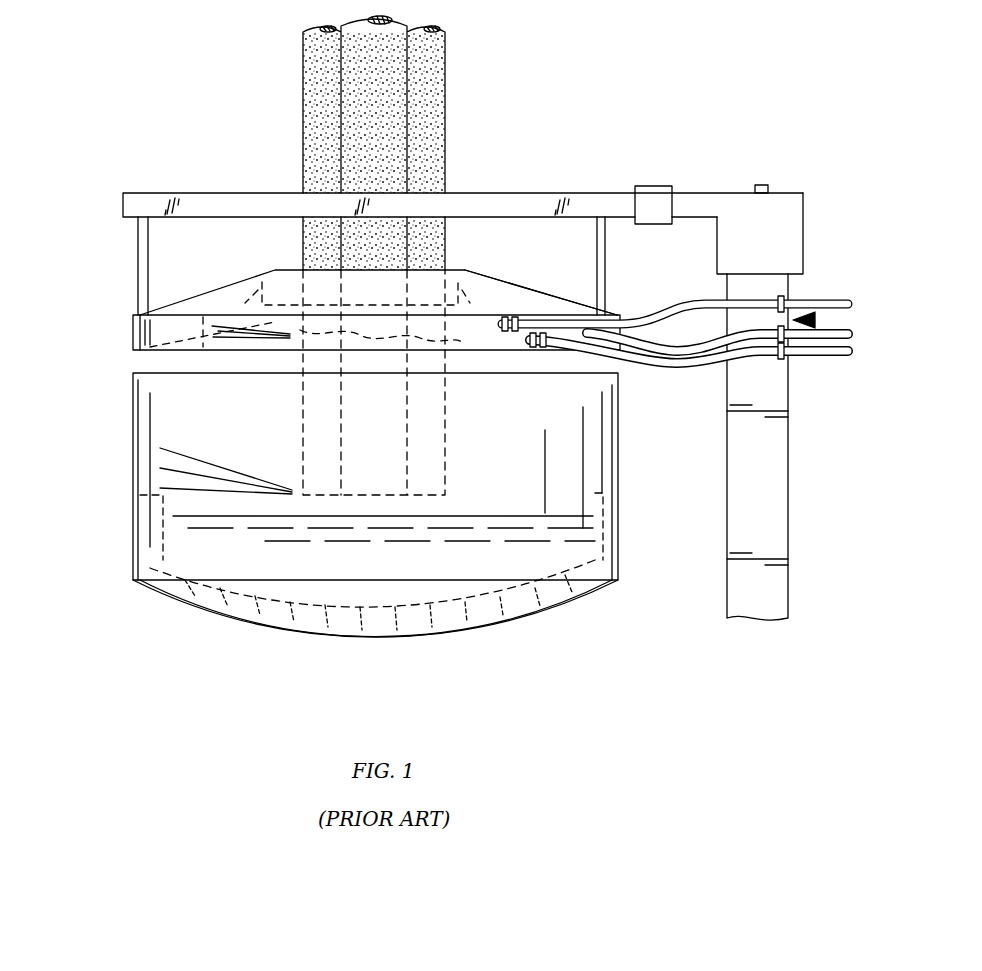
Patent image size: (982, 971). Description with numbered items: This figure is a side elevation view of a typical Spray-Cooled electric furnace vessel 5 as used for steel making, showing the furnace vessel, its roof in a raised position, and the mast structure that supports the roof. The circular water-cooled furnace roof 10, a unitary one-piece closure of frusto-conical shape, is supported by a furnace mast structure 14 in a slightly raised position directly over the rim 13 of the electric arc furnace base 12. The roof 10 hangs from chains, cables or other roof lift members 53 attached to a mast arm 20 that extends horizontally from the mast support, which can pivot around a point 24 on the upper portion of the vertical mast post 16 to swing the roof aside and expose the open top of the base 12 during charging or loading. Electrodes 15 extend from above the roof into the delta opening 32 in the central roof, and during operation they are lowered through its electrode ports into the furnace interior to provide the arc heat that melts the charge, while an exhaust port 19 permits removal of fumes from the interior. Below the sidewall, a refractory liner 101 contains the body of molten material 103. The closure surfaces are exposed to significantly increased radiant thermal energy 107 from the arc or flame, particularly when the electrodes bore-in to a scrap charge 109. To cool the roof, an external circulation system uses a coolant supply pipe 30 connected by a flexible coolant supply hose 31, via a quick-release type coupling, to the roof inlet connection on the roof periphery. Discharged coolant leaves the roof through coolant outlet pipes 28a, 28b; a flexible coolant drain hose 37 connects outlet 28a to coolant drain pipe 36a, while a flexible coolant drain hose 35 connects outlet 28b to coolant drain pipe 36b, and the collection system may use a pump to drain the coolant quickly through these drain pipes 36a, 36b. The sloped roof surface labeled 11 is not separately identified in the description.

The electric furnace vessel 5 is at (50, 410).
The furnace roof 10 is at (183, 292).
The hood sloped wall 11 is at (522, 287).
The electric arc furnace base 12 is at (112, 534).
The rim 13 is at (257, 374).
The furnace mast structure 14 is at (815, 320).
The electrodes 15 is at (283, 41).
The vertical mast post 16 is at (785, 546).
The exhaust port 19 is at (250, 292).
The mast arm 20 is at (508, 205).
The pivot point 24 is at (766, 184).
The coolant outlet pipe 28a is at (530, 352).
The coolant outlet pipe 28b is at (575, 320).
The coolant supply pipe 30 is at (818, 302).
The flexible coolant supply hose 31 is at (680, 308).
The delta opening 32 is at (460, 288).
The flexible coolant drain hose 35 is at (677, 372).
The coolant drain pipe 36a is at (845, 357).
The coolant drain pipe 36b is at (850, 332).
The flexible coolant drain hose 37 is at (645, 372).
The roof lift members 53 is at (138, 267).
The refractory liner 101 is at (133, 563).
The molten material 103 is at (372, 569).
The radiant thermal energy 107 is at (232, 340).
The scrap charge 109 is at (378, 328).